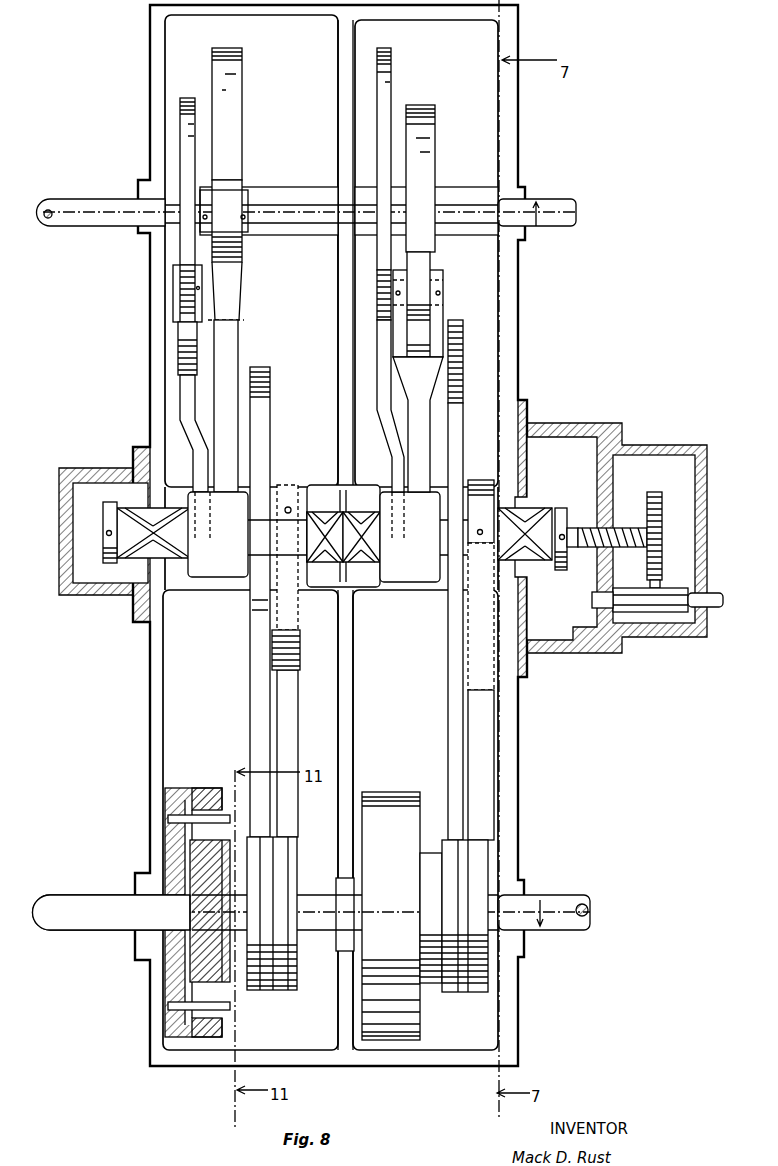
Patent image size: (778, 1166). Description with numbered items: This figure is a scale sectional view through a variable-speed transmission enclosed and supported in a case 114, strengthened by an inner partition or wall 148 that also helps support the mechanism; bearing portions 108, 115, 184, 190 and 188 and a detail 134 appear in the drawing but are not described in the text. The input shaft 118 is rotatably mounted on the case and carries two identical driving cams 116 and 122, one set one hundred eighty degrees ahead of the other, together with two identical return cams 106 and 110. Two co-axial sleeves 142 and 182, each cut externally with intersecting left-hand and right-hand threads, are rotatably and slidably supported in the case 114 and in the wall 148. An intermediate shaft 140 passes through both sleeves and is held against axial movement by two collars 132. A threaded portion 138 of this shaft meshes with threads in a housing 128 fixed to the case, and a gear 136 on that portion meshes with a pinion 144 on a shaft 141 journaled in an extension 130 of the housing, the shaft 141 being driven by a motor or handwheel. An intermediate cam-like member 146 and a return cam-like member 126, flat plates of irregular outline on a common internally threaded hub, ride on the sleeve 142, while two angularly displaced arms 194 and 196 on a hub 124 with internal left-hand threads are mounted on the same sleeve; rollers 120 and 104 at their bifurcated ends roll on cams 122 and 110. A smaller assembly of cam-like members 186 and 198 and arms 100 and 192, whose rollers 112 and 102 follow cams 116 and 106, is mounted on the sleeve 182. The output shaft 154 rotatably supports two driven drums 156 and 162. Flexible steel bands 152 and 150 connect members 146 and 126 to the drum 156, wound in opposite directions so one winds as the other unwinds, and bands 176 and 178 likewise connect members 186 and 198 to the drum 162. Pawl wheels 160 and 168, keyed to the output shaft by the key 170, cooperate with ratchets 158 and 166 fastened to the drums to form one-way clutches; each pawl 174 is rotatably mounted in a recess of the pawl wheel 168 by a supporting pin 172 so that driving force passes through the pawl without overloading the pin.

The arm 100 is at (228, 338).
The roller 102 is at (185, 312).
The roller 104 is at (382, 265).
The return cam 106 is at (187, 98).
The bearing hub 108 is at (290, 190).
The return cam 110 is at (389, 66).
The roller 112 is at (232, 185).
The case 114 is at (512, 145).
The bearing hub 115 is at (466, 195).
The driving cam 116 is at (232, 95).
The input shaft 118 is at (100, 200).
The roller 120 is at (430, 268).
The driving cam 122 is at (428, 133).
The hub 124 is at (418, 582).
The return cam-like member 126 is at (463, 360).
The housing 128 is at (611, 536).
The extension 130 is at (660, 452).
The collar 132 is at (339, 526).
The ball detent 134 is at (108, 532).
The gear 136 is at (658, 503).
The threaded portion 138 is at (625, 548).
The intermediate shaft 140 is at (576, 548).
The shaft 141 is at (716, 612).
The sleeve 142 is at (368, 556).
The pinion 144 is at (661, 625).
The intermediate cam-like member 146 is at (466, 632).
The inner partition 148 is at (340, 330).
The flexible steel band 150 is at (458, 384).
The flexible steel band 152 is at (484, 643).
The output shaft 154 is at (62, 931).
The driven drum 156 is at (460, 995).
The ratchet 158 is at (421, 985).
The pawl wheel 160 is at (390, 800).
The driven drum 162 is at (268, 991).
The ratchet 166 is at (226, 985).
The pawl wheel 168 is at (145, 899).
The key 170 is at (120, 908).
The supporting pin 172 is at (175, 812).
The pawl 174 is at (207, 790).
The flexible steel band 176 is at (303, 661).
The flexible steel band 178 is at (263, 594).
The sleeve 182 is at (140, 558).
The bearing hub 184 is at (212, 578).
The intermediate cam-like member 186 is at (297, 648).
The housing extension 188 is at (60, 580).
The bearing hub 190 is at (325, 486).
The arm 192 is at (190, 428).
The arm 194 is at (415, 442).
The arm 196 is at (385, 425).
The return cam-like member 198 is at (272, 398).